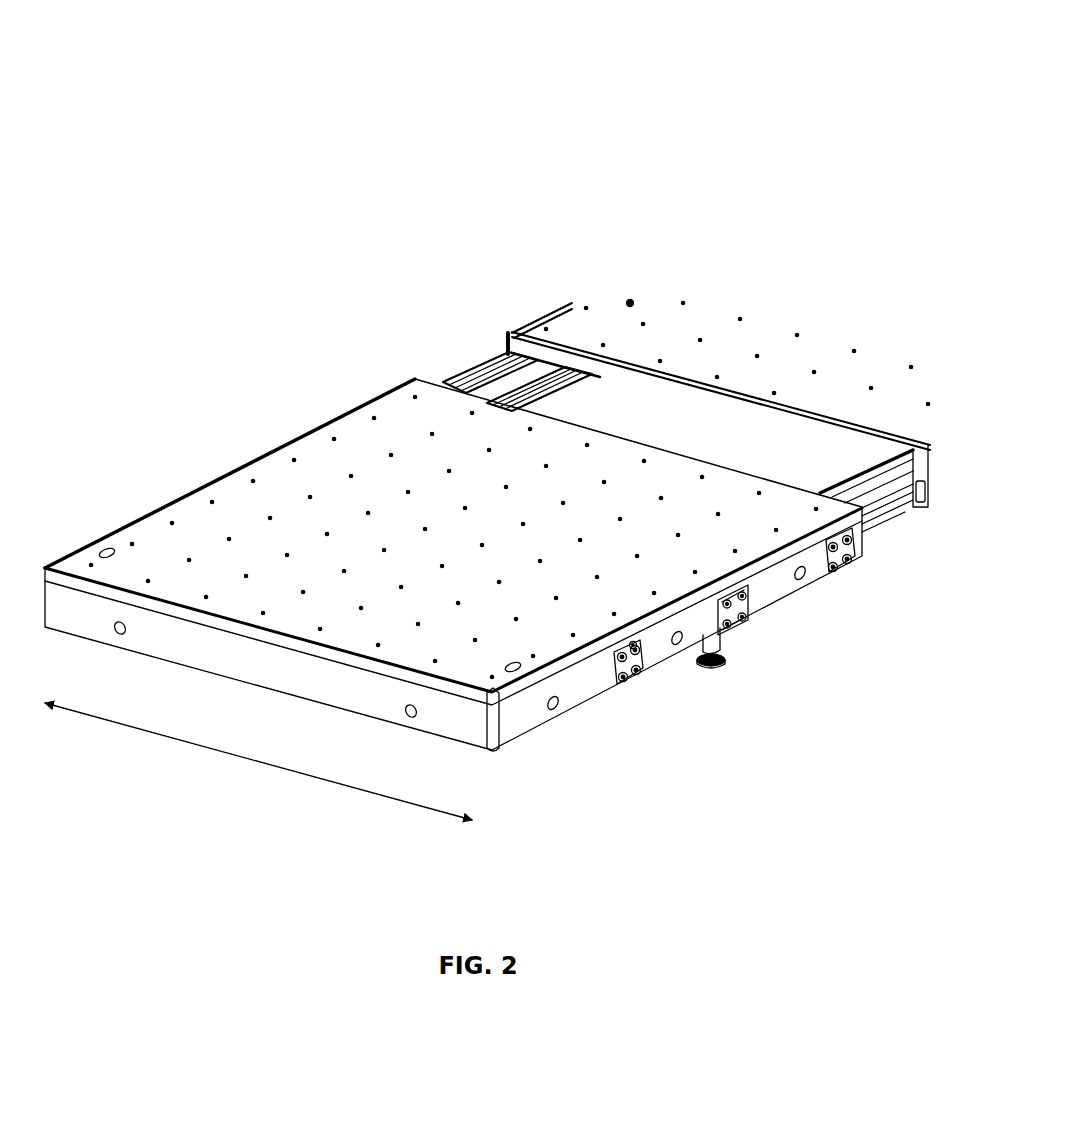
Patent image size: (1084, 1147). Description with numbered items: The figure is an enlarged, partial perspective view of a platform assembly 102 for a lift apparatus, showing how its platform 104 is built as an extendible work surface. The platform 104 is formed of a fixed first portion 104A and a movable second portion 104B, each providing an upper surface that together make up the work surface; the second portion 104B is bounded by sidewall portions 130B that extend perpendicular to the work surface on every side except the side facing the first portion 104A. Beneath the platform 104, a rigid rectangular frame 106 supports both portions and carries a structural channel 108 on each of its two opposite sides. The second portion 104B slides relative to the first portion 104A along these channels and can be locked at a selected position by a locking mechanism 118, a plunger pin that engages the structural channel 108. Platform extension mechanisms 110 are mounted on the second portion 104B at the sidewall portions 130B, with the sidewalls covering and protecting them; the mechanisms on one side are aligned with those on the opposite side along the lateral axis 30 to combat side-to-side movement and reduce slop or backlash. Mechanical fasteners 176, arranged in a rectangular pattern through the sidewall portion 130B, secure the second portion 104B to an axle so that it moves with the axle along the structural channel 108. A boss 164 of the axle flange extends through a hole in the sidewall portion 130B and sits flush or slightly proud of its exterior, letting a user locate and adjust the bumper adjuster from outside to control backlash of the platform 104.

The platform assembly 102 is at (587, 90).
The platform 104 is at (675, 167).
The first portion 104A is at (628, 301).
The second portion 104B is at (288, 472).
The frame 106 is at (552, 388).
The structural channel 108 is at (483, 362).
The platform extension mechanism 110 is at (628, 694).
The locking mechanism 118 is at (757, 641).
The sidewall portion 130B is at (301, 673).
The boss 164 is at (638, 650).
The mechanical fastener 176 is at (633, 643).
The lateral axis 30 is at (258, 761).